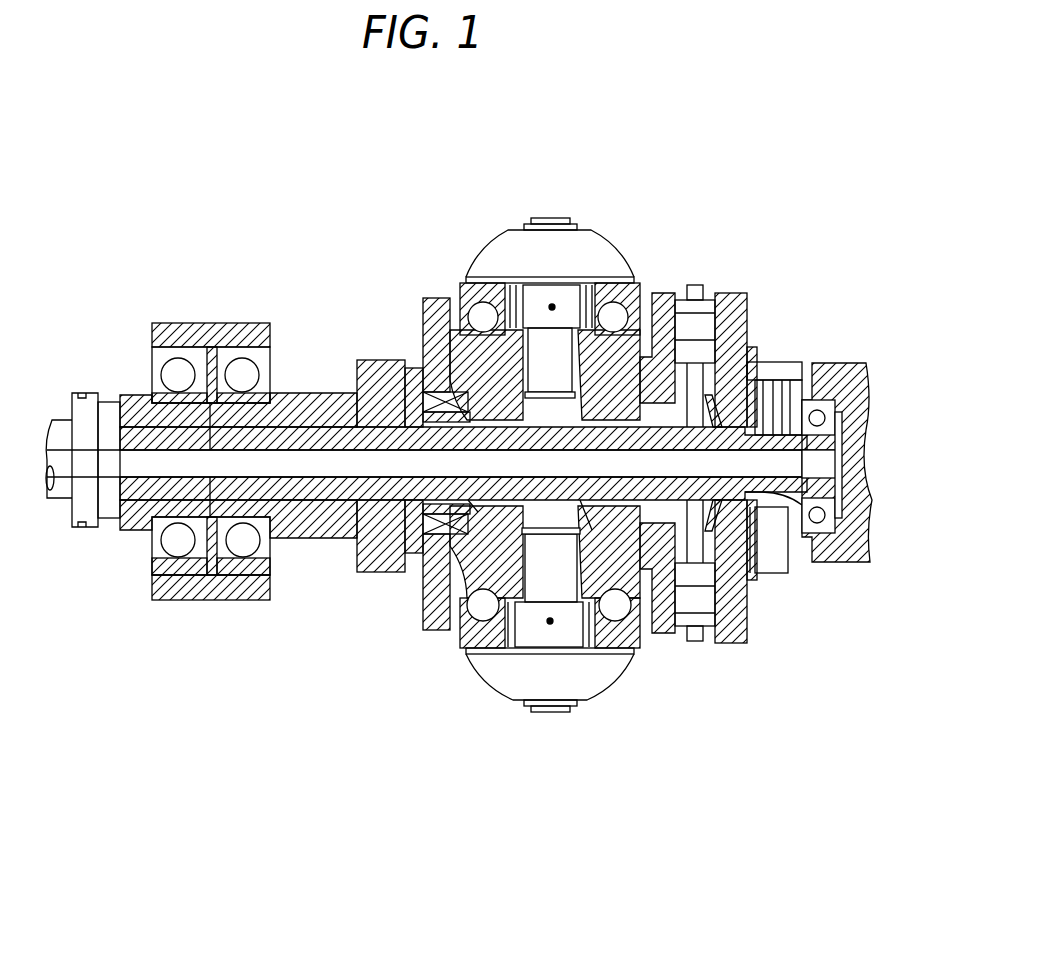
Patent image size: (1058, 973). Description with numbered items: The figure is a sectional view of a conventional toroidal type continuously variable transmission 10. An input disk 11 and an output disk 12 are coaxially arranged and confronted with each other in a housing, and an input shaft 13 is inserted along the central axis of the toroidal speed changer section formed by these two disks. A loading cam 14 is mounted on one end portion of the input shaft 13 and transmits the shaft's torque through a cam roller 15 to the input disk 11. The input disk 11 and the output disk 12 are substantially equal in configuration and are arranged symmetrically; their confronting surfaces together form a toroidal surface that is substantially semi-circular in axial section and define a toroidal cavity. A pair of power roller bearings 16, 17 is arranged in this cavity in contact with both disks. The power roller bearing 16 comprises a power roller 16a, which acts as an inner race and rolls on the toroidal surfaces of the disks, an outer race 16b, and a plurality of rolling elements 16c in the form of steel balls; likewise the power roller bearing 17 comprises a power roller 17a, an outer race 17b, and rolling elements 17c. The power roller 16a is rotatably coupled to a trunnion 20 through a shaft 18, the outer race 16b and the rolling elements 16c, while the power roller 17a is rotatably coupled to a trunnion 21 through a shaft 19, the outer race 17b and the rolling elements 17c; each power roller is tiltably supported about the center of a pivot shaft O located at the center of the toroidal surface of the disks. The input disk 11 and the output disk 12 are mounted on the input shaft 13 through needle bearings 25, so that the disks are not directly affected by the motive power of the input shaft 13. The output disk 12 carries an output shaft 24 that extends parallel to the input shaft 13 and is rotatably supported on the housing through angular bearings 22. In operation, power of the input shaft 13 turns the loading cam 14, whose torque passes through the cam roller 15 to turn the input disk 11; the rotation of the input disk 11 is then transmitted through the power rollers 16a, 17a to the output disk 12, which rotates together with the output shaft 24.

The toroidal type continuously variable transmission 10 is at (500, 127).
The input disk 11 is at (747, 310).
The output disk 12 is at (425, 300).
The input shaft 13 is at (118, 402).
The loading cam 14 is at (735, 645).
The cam roller 15 is at (680, 625).
The power roller bearing 16 is at (455, 258).
The power roller 16a is at (512, 295).
The outer race 16b is at (635, 262).
The rolling elements 16c is at (672, 312).
The power roller bearing 17 is at (508, 782).
The power roller 17a is at (620, 657).
The outer race 17b is at (477, 640).
The rolling elements 17c is at (477, 617).
The shaft 18 is at (540, 298).
The shaft 19 is at (535, 632).
The trunnion 20 is at (612, 263).
The trunnion 21 is at (588, 678).
The angular bearings 22 is at (242, 368).
The output shaft 24 is at (360, 362).
The needle bearings 25 is at (583, 528).
The pivot shaft O is at (554, 305).